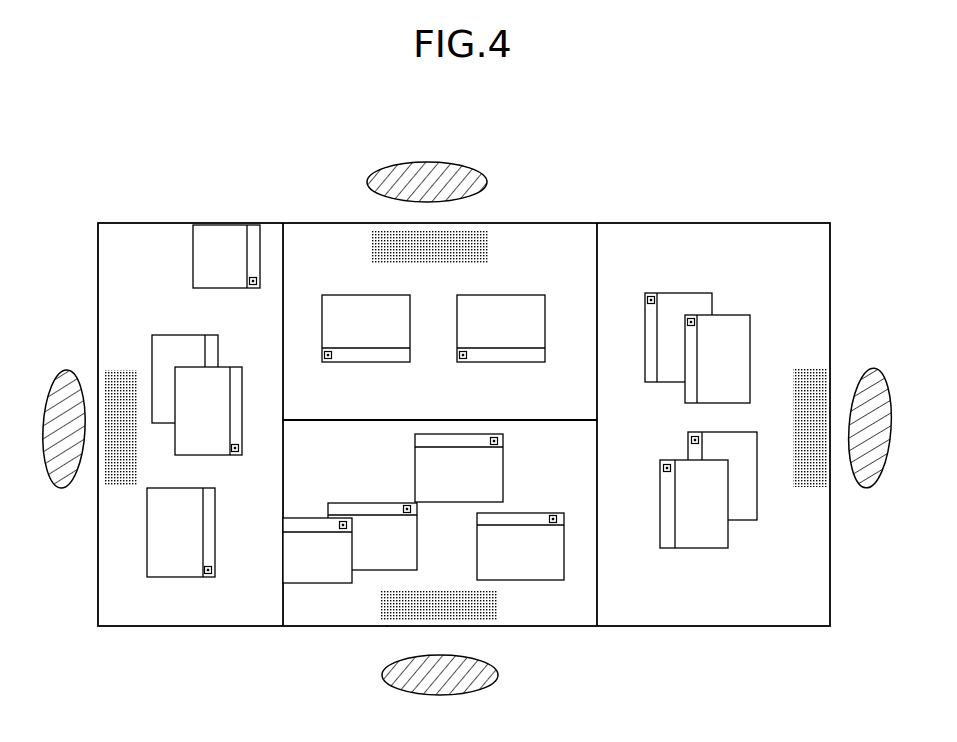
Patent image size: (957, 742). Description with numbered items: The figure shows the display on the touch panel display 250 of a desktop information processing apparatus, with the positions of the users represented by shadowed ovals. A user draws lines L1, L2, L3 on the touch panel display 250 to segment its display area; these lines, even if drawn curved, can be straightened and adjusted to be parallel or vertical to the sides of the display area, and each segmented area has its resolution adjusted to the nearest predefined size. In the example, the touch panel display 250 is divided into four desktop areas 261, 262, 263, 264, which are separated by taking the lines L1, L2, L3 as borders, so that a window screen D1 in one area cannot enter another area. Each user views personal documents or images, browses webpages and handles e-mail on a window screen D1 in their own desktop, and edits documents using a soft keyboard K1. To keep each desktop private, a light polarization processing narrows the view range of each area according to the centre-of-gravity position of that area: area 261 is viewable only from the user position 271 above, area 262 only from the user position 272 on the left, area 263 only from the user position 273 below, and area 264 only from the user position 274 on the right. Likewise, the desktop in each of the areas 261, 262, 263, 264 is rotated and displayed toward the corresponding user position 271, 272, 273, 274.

The touch panel display 250 is at (695, 208).
The desktop area 261 is at (551, 236).
The desktop area 262 is at (158, 237).
The desktop area 263 is at (461, 554).
The desktop area 264 is at (815, 313).
The user position 271 is at (375, 178).
The user position 272 is at (65, 488).
The user position 273 is at (480, 682).
The user position 274 is at (866, 372).
The line L1 is at (283, 630).
The line L2 is at (597, 630).
The line L3 is at (602, 421).
The window screen D1 is at (572, 553).
The soft keyboard K1 is at (388, 627).